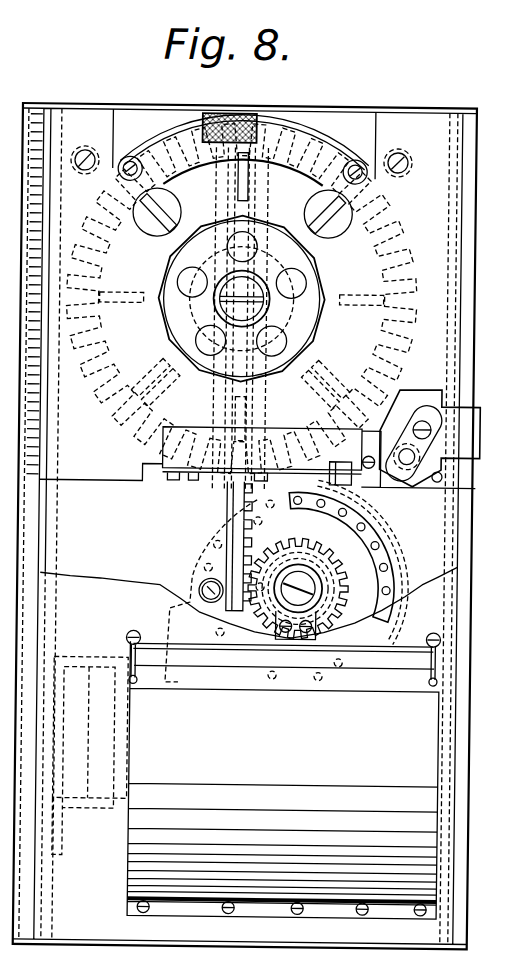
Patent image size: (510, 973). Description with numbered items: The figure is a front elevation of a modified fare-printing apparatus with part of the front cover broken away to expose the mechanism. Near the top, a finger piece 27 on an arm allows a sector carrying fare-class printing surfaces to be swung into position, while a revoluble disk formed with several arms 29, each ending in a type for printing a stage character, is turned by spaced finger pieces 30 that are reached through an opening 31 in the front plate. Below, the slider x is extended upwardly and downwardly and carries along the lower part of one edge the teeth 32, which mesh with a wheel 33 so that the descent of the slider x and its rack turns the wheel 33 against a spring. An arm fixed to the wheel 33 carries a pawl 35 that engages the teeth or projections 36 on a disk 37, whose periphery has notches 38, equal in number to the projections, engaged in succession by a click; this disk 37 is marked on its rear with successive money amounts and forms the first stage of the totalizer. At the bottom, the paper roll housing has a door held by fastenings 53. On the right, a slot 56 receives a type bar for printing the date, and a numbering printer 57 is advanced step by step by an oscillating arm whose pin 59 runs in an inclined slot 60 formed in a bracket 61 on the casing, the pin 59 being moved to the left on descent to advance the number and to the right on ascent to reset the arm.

The finger piece 27 is at (262, 109).
The arms 29 is at (403, 380).
The finger pieces 30 is at (235, 296).
The opening 31 is at (335, 224).
The teeth 32 is at (245, 520).
The wheel 33 is at (351, 574).
The pawl 35 is at (307, 646).
The teeth or projections 36 is at (394, 588).
The disk 37 is at (393, 513).
The notches 38 is at (404, 540).
The fastenings 53 is at (442, 665).
The slot 56 is at (377, 465).
The numbering printer 57 is at (450, 475).
The pin 59 is at (431, 425).
The inclined slot 60 is at (422, 453).
The bracket 61 is at (429, 407).
The slider x is at (232, 500).